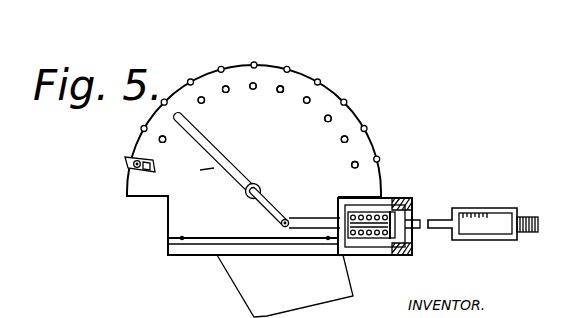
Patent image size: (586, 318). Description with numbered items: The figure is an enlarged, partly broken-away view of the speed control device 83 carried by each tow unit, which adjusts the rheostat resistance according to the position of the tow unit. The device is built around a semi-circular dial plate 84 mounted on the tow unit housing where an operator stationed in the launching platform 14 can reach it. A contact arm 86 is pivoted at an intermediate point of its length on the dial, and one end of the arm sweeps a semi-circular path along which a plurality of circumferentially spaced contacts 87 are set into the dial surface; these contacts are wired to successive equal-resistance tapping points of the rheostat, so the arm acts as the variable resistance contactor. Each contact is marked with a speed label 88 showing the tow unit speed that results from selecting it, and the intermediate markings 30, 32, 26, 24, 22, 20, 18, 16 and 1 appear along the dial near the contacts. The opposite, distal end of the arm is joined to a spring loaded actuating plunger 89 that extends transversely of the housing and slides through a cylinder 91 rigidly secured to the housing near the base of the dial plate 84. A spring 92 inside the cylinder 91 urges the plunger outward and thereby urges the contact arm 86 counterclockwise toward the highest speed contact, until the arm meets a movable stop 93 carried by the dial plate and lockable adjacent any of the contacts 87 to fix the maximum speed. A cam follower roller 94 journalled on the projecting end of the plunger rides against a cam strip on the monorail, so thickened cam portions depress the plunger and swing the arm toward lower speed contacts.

The speed control device 83 is at (350, 100).
The dial plate 84 is at (293, 88).
The contacts 87 is at (250, 82).
The label 88 is at (283, 119).
The stop 93 is at (128, 156).
The pointer arm 30 is at (219, 158).
The hole 32 is at (171, 158).
The contact arm 86 is at (221, 166).
The actuating plunger 89 is at (298, 216).
The spring 92 is at (338, 203).
The cylinder 91 is at (411, 203).
The cam follower roller 94 is at (527, 215).
The hole position 24 is at (233, 103).
The hole position 22 is at (254, 100).
The hole position 20 is at (277, 103).
The hole position 18 is at (300, 111).
The hole position 16 is at (319, 128).
The launching platform 14 is at (334, 147).
The hole position 1 is at (344, 169).
The hole position 26 is at (211, 112).